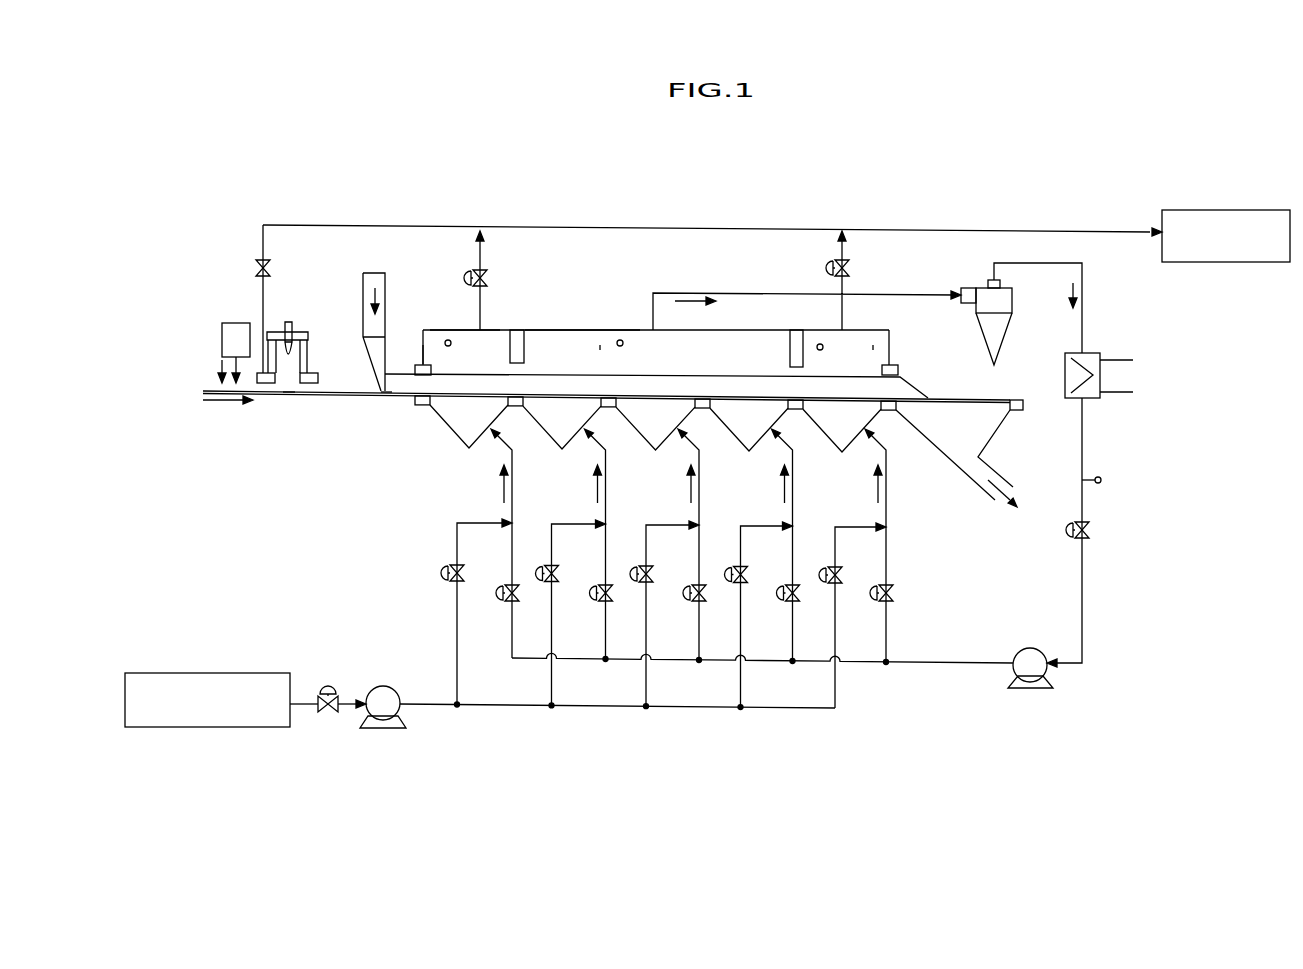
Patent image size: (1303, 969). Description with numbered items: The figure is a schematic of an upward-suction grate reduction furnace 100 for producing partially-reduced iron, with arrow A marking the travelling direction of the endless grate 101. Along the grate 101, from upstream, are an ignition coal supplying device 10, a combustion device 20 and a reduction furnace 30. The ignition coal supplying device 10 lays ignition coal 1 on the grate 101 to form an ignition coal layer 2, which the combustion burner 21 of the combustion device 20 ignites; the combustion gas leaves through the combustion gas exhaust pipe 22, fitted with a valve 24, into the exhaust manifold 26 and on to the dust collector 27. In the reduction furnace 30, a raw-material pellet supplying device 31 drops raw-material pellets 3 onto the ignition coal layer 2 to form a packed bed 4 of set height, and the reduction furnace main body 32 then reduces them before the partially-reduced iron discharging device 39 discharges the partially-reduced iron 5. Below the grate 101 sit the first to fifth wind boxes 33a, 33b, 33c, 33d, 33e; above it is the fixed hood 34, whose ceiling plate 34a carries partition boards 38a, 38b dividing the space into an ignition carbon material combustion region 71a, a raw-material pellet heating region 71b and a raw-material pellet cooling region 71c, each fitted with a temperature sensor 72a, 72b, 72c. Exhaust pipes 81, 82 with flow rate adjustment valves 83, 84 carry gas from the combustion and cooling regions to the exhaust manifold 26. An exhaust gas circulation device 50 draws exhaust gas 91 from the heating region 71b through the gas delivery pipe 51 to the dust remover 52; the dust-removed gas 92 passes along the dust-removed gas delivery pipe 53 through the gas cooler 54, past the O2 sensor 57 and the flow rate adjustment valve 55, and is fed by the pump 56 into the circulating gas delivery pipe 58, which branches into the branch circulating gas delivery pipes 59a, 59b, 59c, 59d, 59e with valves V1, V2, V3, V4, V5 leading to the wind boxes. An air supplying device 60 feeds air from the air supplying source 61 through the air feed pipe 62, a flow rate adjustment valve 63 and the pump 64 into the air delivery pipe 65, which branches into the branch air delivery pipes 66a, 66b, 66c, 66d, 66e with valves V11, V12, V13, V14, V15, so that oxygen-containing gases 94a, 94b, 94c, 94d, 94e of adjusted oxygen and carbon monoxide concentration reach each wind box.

The grate reduction furnace 100 is at (561, 168).
The ignition coal 1 is at (220, 378).
The travelling direction of the grate A is at (222, 404).
The ignition coal layer 2 is at (283, 396).
The raw-material pellets 3 is at (381, 303).
The packed bed of raw-material pellets 4 is at (390, 396).
The partially-reduced iron 5 is at (1005, 512).
The ignition coal supplying device 10 is at (221, 340).
The combustion device 20 is at (356, 323).
The combustion burner 21 is at (288, 321).
The combustion gas exhaust pipe 22 is at (262, 300).
The valve 24 is at (255, 268).
The exhaust manifold 26 is at (412, 226).
The dust collector 27 is at (1262, 210).
The reduction furnace 30 is at (643, 293).
The raw-material pellet supplying device 31 is at (380, 273).
The reduction furnace main body 32 is at (559, 314).
The first wind box 33a is at (452, 430).
The second wind box 33b is at (545, 430).
The third wind box 33c is at (639, 430).
The fourth wind box 33d is at (733, 430).
The fifth wind box 33e is at (826, 430).
The hood 34 is at (538, 330).
The ceiling plate 34a is at (463, 323).
The first partition board 38a is at (509, 340).
The second partition board 38b is at (790, 340).
The partially-reduced iron discharging device 39 is at (960, 487).
The exhaust gas circulation device 50 is at (1090, 575).
The raw-material pellet heating region gas delivery pipe 51 is at (727, 293).
The dust remover 52 is at (982, 286).
The dust-removed gas delivery pipe 53 is at (1083, 322).
The gas cooler 54 is at (1064, 380).
The flow rate adjustment valve 55 is at (1066, 522).
The pump 56 is at (1028, 648).
The O2 sensor 57 is at (1101, 480).
The circulating gas delivery pipe 58 is at (946, 664).
The first branch circulating gas delivery pipe 59a is at (513, 508).
The second branch circulating gas delivery pipe 59b is at (607, 508).
The third branch circulating gas delivery pipe 59c is at (700, 508).
The fourth branch circulating gas delivery pipe 59d is at (793, 508).
The fifth branch circulating gas delivery pipe 59e is at (887, 508).
The air supplying device 60 is at (376, 633).
The air supplying source 61 is at (245, 673).
The air feed pipe 62 is at (304, 702).
The flow rate adjustment valve 63 is at (328, 684).
The pump 64 is at (383, 686).
The air delivery pipe 65 is at (430, 708).
The first branch air delivery pipe 66a is at (458, 550).
The second branch air delivery pipe 66b is at (552, 550).
The third branch air delivery pipe 66c is at (647, 550).
The fourth branch air delivery pipe 66d is at (742, 550).
The fifth branch air delivery pipe 66e is at (836, 550).
The ignition carbon material combustion region 71a is at (430, 342).
The raw-material pellet heating region 71b is at (601, 343).
The raw-material pellet cooling region 71c is at (874, 343).
The temperature sensor 72a is at (451, 345).
The temperature sensor 72b is at (623, 345).
The temperature sensor 72c is at (823, 349).
The ignition carbon material combustion region gas exhaust pipe 81 is at (482, 259).
The raw-material pellet cooling region gas exhaust pipe 82 is at (844, 258).
The flow rate adjustment valve 83 is at (461, 278).
The flow rate adjustment valve 84 is at (822, 268).
The exhaust gas 91 is at (700, 310).
The dust-removed gas 92 is at (1072, 292).
The oxygen-containing gas 94a is at (502, 490).
The oxygen-containing gas 94b is at (596, 490).
The oxygen-containing gas 94c is at (689, 490).
The oxygen-containing gas 94d is at (782, 490).
The oxygen-containing gas 94e is at (876, 490).
The endless grate 101 is at (345, 396).
The flow rate adjustment valve V1 is at (499, 601).
The flow rate adjustment valve V2 is at (592, 601).
The flow rate adjustment valve V3 is at (686, 601).
The flow rate adjustment valve V4 is at (780, 601).
The flow rate adjustment valve V5 is at (873, 601).
The flow rate adjustment valve V11 is at (444, 581).
The flow rate adjustment valve V12 is at (538, 582).
The flow rate adjustment valve V13 is at (633, 582).
The flow rate adjustment valve V14 is at (728, 582).
The flow rate adjustment valve V15 is at (822, 583).